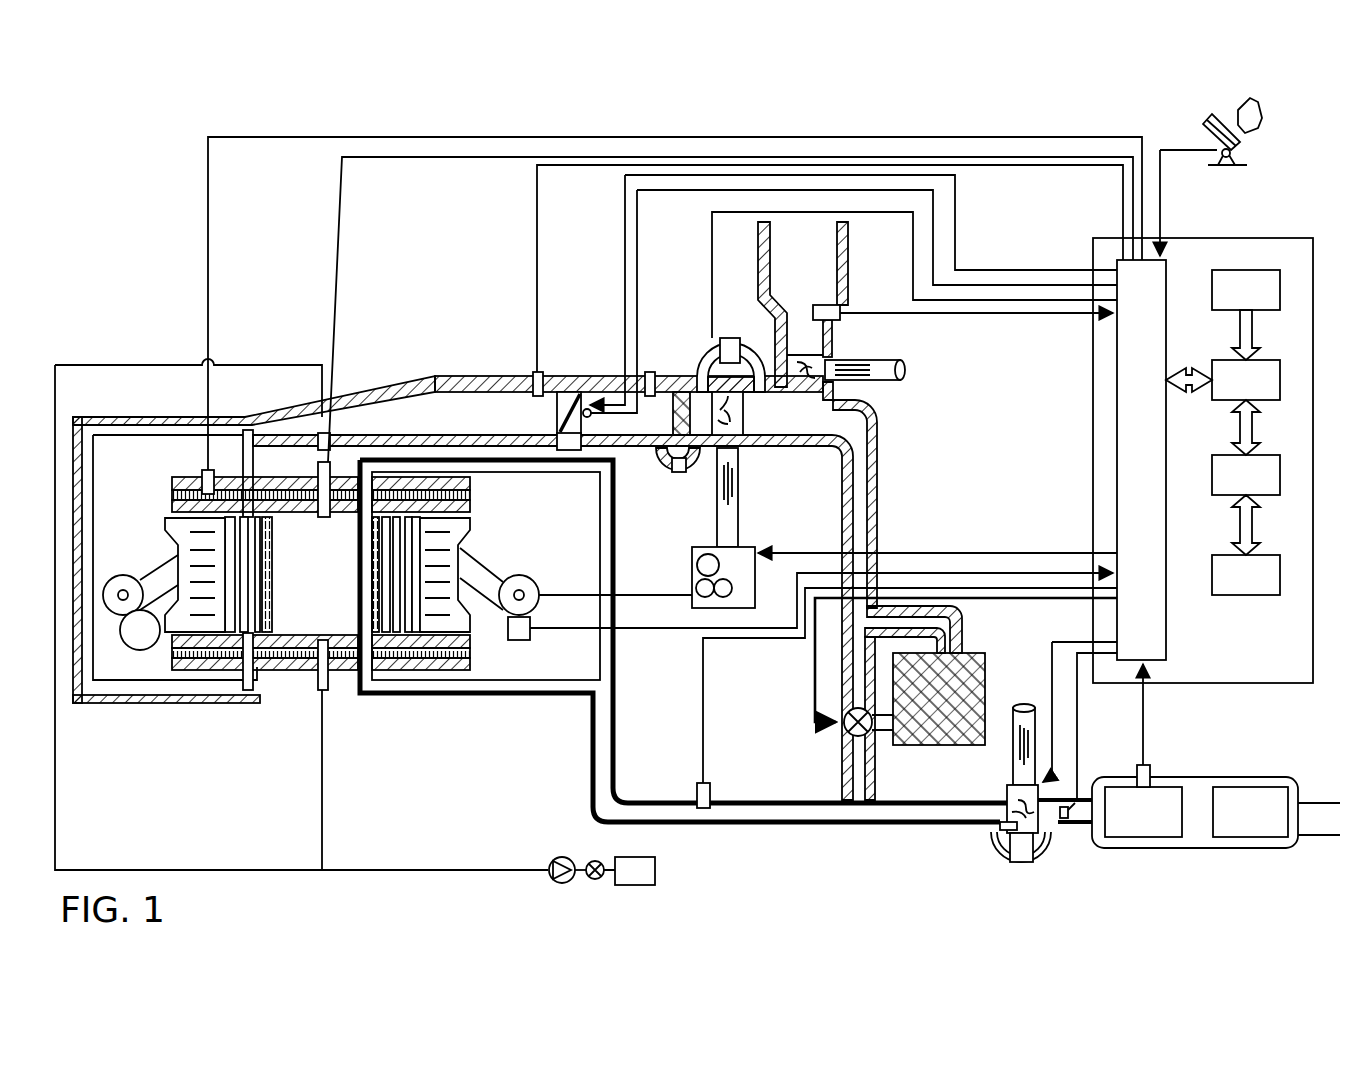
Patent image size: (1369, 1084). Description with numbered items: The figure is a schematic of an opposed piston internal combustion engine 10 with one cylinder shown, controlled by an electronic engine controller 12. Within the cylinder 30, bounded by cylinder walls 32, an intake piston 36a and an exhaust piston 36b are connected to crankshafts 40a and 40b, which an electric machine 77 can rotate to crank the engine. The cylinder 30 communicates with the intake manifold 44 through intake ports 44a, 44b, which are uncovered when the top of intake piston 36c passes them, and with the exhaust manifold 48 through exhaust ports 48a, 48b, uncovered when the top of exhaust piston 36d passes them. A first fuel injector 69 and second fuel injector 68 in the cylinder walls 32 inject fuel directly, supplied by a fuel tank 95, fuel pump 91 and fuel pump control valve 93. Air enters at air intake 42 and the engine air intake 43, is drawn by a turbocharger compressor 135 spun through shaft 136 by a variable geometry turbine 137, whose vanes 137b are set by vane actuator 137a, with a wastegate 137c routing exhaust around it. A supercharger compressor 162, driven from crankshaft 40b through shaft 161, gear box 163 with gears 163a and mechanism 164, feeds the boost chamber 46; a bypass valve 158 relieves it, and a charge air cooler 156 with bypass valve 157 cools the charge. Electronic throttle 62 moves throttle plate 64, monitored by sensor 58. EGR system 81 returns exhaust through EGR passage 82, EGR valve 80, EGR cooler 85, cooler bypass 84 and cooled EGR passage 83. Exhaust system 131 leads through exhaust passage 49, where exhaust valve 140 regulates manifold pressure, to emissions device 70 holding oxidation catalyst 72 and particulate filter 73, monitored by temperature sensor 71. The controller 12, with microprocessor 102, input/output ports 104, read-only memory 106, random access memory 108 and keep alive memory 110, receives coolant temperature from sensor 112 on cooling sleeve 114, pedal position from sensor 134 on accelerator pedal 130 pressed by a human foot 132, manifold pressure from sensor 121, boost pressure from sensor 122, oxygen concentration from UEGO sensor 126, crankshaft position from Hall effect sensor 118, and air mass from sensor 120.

The opposed piston internal combustion engine 10 is at (176, 355).
The electronic engine controller 12 is at (1300, 238).
The cylinder 30 is at (283, 668).
The cylinder walls 32 is at (460, 522).
The intake piston 36a is at (178, 552).
The exhaust piston 36b is at (445, 570).
The top of intake piston 36c is at (322, 520).
The top of exhaust piston 36d is at (390, 655).
The crankshaft 40a is at (115, 612).
The crankshaft 40b is at (527, 577).
The air intake 42 is at (803, 304).
The engine air intake 43 is at (486, 304).
The intake manifold 44 is at (629, 405).
The intake port 44a is at (240, 700).
The intake port 44b is at (248, 430).
The intake boost chamber 46 is at (650, 407).
The exhaust manifold 48 is at (513, 478).
The exhaust port 48a is at (362, 690).
The exhaust port 48b is at (372, 477).
The exhaust passage 49 is at (1082, 795).
The throttle position sensor 58 is at (592, 413).
The electronic throttle 62 is at (828, 280).
The throttle plate 64 is at (576, 392).
The second fuel injector 68 is at (343, 462).
The first fuel injector 69 is at (318, 690).
The emissions device 70 is at (1275, 778).
The temperature sensor 71 is at (1150, 765).
The oxidation catalyst 72 is at (1143, 812).
The particulate filter 73 is at (1250, 812).
The electric machine 77 is at (140, 630).
The EGR valve 80 is at (846, 730).
The EGR system 81 is at (806, 698).
The EGR passage 82 is at (858, 508).
The cooled EGR passage 83 is at (935, 625).
The EGR cooler bypass 84 is at (855, 690).
The EGR cooler 85 is at (893, 745).
The fuel pump 91 is at (562, 857).
The fuel pump control valve 93 is at (593, 880).
The fuel tank 95 is at (635, 871).
The microprocessor unit 102 is at (1283, 372).
The input/output ports 104 is at (1170, 270).
The read-only memory 106 is at (1283, 283).
The random access memory 108 is at (1283, 470).
The keep alive memory 110 is at (1283, 566).
The temperature sensor 112 is at (203, 472).
The cooling sleeve 114 is at (175, 503).
The Hall effect sensor 118 is at (520, 640).
The air mass sensor 120 is at (835, 305).
The pressure sensor 121 is at (533, 372).
The pressure sensor 122 is at (652, 372).
The universal exhaust gas oxygen sensor 126 is at (700, 785).
The accelerator pedal 130 is at (1210, 128).
The exhaust system 131 is at (870, 842).
The human foot 132 is at (1260, 112).
The position sensor 134 is at (1240, 160).
The turbocharger compressor 135 is at (815, 362).
The shaft 136 is at (870, 382).
The turbocharger variable geometry turbine 137 is at (1007, 795).
The vane actuator 137a is at (1000, 826).
The variable geometry turbine vanes 137b is at (1013, 785).
The wastegate 137c is at (1020, 862).
The exhaust valve 140 is at (1064, 820).
The charge air cooler 156 is at (681, 392).
The air charge cooler bypass valve 157 is at (679, 472).
The supercharger compressor bypass valve 158 is at (730, 338).
The shaft 161 is at (717, 525).
The supercharger compressor 162 is at (738, 440).
The supercharger gear box 163 is at (692, 570).
The gears 163a is at (712, 560).
The mechanism 164 is at (692, 598).